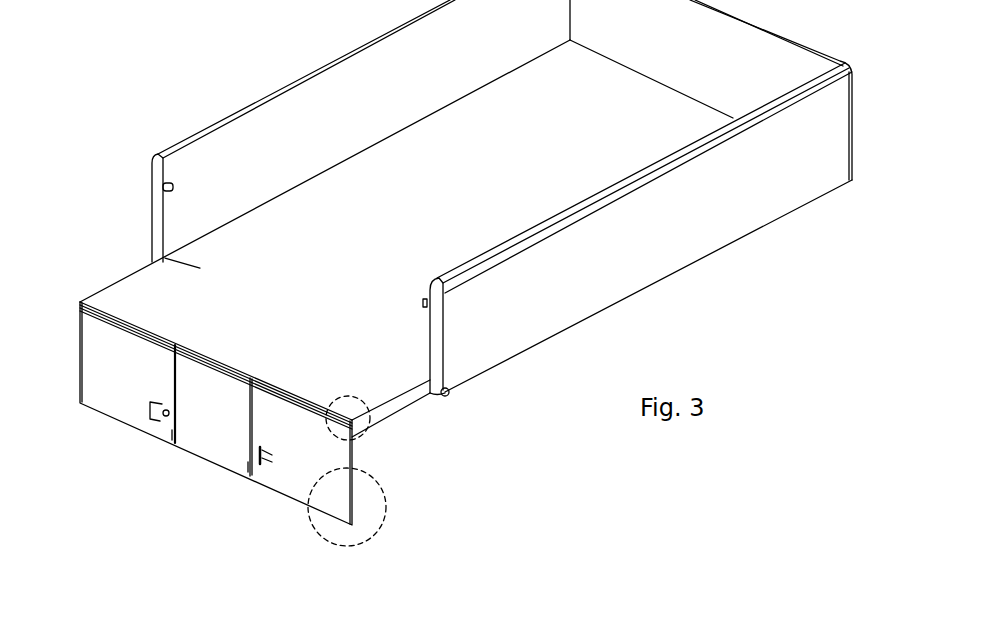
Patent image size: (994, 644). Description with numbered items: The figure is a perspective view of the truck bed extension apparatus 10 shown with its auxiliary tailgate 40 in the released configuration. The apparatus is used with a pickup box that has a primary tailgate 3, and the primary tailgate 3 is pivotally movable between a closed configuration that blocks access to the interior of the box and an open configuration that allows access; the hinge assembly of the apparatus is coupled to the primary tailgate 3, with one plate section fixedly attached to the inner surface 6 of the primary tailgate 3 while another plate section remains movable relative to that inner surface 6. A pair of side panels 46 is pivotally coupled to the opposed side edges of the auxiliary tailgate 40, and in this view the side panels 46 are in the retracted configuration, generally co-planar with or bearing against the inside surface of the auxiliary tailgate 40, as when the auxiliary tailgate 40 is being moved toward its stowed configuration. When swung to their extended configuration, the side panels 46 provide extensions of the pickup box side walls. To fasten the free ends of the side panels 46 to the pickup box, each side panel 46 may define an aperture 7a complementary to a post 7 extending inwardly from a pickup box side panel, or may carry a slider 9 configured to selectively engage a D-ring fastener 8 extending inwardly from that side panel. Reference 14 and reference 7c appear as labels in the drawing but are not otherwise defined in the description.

The truck bed extension apparatus 10 is at (75, 373).
The inner surface 6 is at (217, 330).
The post 7 is at (171, 181).
The D-ring fastener 8 is at (425, 303).
The primary tailgate 3 is at (413, 413).
The front panel 14 is at (308, 523).
The side panels 46 is at (93, 345).
The auxiliary tailgate 40 is at (213, 447).
The aperture 7a is at (166, 422).
The slider 9 is at (166, 415).
The corner detail 7c is at (375, 430).